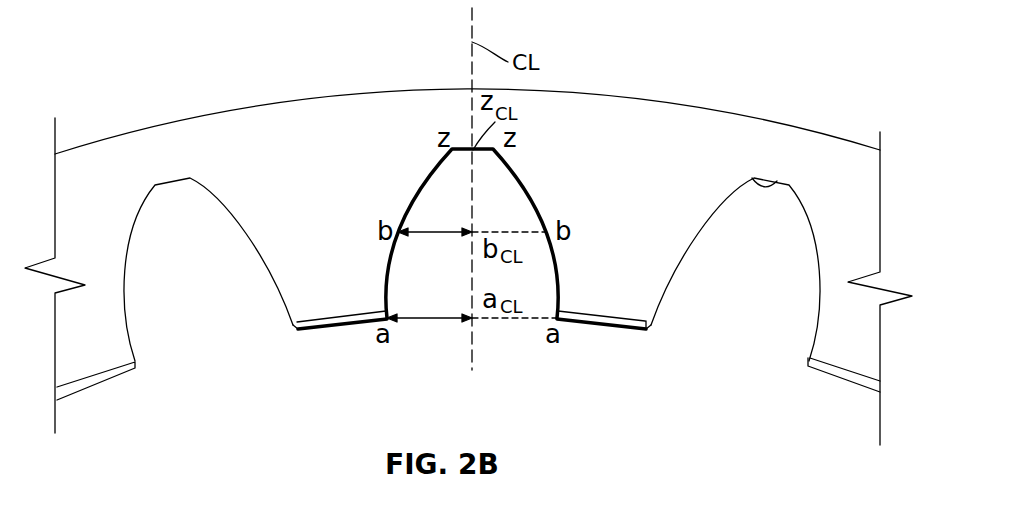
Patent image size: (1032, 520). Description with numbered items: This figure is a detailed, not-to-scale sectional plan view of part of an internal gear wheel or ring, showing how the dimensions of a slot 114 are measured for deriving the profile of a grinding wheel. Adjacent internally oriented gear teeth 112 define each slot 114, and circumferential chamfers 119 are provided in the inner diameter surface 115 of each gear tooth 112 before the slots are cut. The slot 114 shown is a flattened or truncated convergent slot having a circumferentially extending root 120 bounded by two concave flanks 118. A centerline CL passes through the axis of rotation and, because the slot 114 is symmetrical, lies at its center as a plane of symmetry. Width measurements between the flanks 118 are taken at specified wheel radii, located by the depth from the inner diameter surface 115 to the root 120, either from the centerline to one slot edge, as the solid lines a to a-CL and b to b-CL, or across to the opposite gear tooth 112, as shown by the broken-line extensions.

The gear tooth 112 is at (600, 286).
The slot 114 is at (738, 347).
The inner diameter surface 115 is at (637, 330).
The flank 118 is at (685, 247).
The circumferential chamfer 119 is at (89, 381).
The root 120 is at (172, 185).